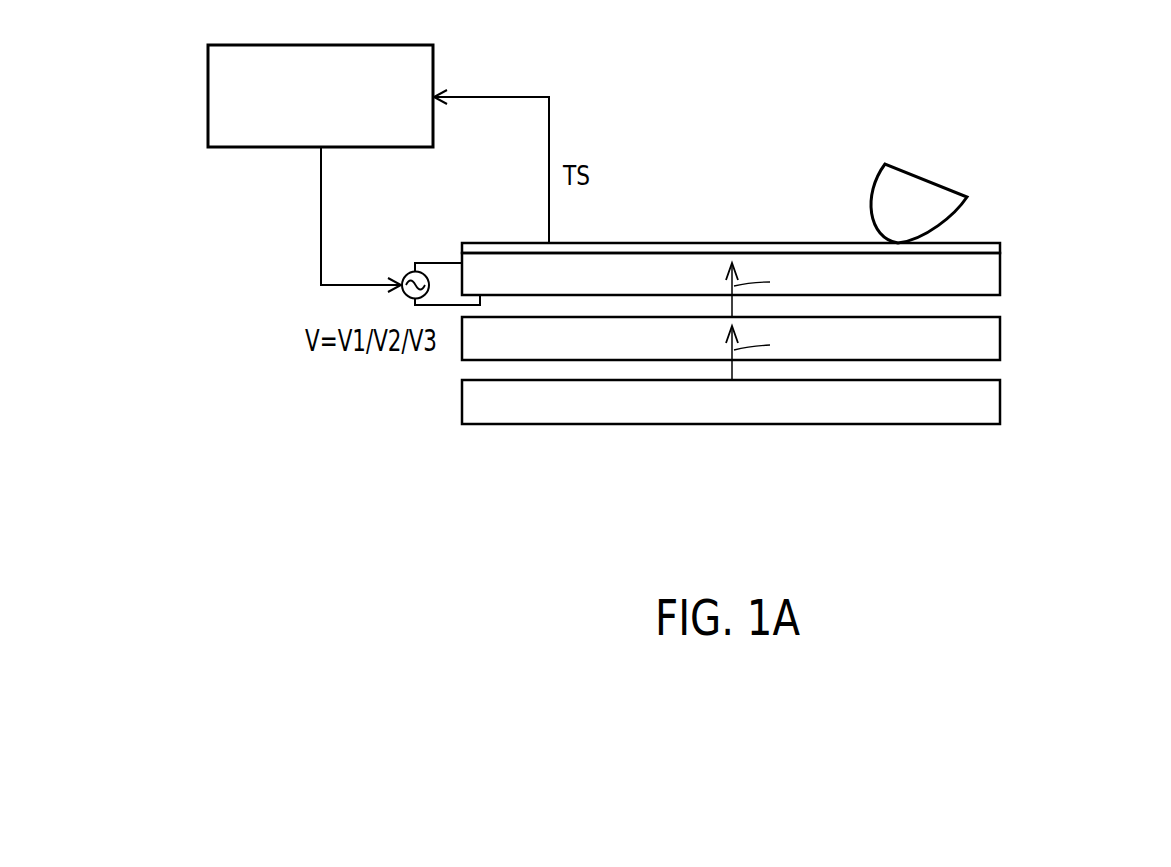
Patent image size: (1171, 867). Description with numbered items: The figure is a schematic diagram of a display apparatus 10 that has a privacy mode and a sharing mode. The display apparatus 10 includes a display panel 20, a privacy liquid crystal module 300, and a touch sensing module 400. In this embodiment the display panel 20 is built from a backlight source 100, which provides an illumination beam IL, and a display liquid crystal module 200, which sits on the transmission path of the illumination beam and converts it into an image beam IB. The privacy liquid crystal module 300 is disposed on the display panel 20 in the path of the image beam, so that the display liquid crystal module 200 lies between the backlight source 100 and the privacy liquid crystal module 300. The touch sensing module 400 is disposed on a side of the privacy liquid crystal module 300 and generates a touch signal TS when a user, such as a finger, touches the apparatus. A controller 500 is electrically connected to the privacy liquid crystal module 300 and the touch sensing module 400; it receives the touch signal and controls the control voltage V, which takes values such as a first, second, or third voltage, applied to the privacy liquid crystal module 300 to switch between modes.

The display apparatus 10 is at (796, 337).
The display panel 20 is at (796, 370).
The backlight source 100 is at (978, 410).
The display liquid crystal module 200 is at (978, 345).
The privacy liquid crystal module 300 is at (978, 283).
The touch sensing module 400 is at (978, 250).
The controller 500 is at (374, 45).